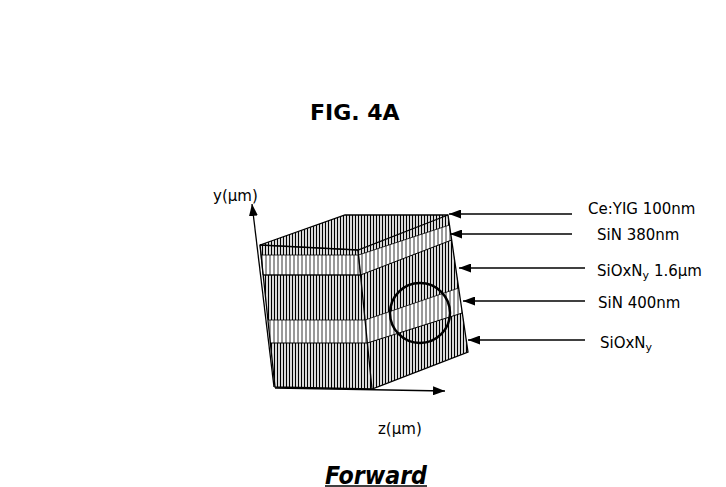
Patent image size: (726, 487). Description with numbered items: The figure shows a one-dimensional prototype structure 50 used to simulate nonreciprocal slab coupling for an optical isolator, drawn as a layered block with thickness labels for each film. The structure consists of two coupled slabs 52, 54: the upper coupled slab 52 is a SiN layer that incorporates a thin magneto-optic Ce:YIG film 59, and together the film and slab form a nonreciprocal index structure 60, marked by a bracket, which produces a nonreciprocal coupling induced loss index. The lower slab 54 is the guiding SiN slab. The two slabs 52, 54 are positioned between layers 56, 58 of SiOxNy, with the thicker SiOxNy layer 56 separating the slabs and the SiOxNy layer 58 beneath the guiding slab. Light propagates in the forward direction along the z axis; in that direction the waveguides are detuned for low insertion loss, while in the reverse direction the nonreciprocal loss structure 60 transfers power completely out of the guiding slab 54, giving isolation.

The optical waveguide structure 50 is at (290, 217).
The coupled slab 52 is at (271, 259).
The guiding SiN slab 54 is at (268, 337).
The SiOxNy layer 56 is at (268, 300).
The SiOxNy layer 58 is at (283, 380).
The magneto-optic film (Ce:YIG) 59 is at (365, 231).
The nonreciprocal index structure 60 is at (225, 272).